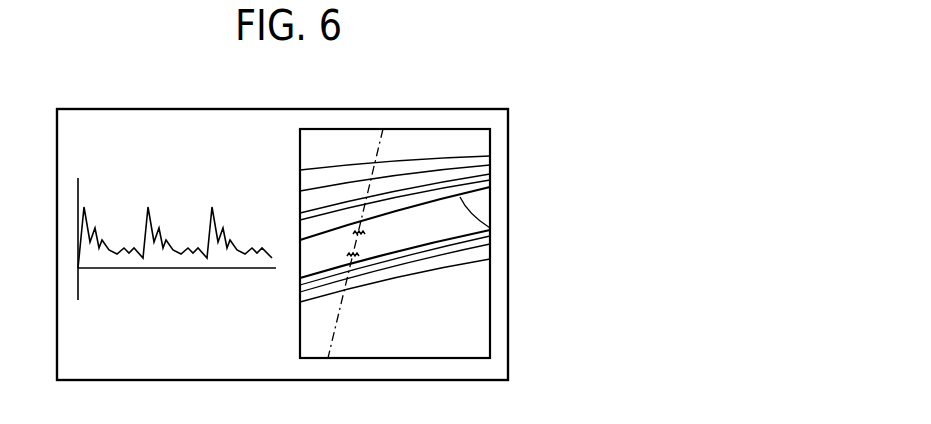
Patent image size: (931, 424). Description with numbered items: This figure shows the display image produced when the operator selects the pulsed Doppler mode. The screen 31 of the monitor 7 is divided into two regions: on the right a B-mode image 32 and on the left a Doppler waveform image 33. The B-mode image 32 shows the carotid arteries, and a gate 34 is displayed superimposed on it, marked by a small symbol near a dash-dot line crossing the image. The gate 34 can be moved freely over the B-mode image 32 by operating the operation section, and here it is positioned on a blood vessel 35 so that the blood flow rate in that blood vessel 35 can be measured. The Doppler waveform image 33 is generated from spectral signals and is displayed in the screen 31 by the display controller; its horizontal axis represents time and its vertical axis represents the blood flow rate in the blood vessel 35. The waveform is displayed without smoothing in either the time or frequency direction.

The monitor 7 is at (508, 197).
The screen 31 is at (461, 109).
The B-mode image 32 is at (491, 146).
The Doppler waveform image 33 is at (148, 207).
The gate 34 is at (360, 237).
The blood vessel 35 is at (490, 230).